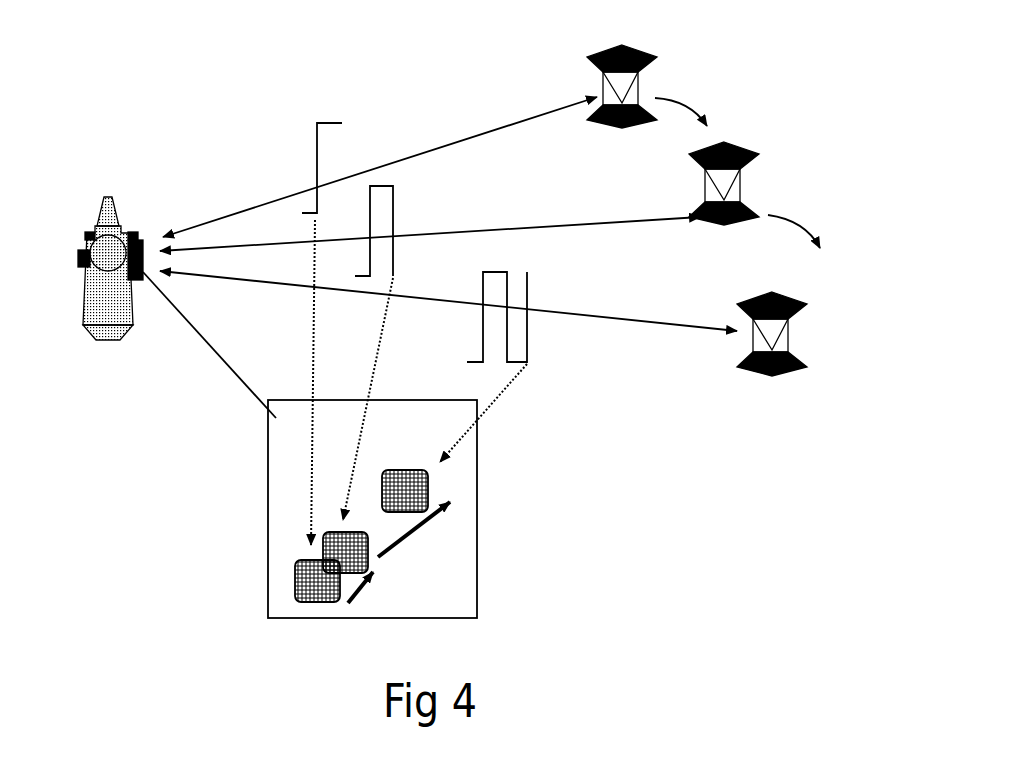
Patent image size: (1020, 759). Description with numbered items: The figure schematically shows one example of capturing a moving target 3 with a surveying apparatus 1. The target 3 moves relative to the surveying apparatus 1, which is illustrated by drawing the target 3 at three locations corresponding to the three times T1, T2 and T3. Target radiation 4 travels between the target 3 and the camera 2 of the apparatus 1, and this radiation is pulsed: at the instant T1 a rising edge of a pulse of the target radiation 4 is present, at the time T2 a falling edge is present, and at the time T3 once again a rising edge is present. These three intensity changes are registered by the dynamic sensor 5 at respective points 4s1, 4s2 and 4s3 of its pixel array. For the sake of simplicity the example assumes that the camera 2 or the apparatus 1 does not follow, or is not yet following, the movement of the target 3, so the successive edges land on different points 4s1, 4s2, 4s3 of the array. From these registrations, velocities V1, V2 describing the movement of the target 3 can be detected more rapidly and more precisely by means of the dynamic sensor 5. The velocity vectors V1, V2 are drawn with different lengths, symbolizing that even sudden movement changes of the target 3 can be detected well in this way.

The surveying apparatus 1 is at (103, 178).
The camera 2 is at (140, 222).
The target 3 is at (731, 208).
The target radiation 4 is at (350, 105).
The sensor 5 is at (364, 520).
The point of the pixel array 4s1 is at (284, 580).
The point of the pixel array 4s2 is at (312, 544).
The point of the pixel array 4s3 is at (440, 473).
The velocity vector V1 is at (372, 597).
The velocity vector V2 is at (420, 541).
The time T1 is at (703, 72).
The time T2 is at (778, 183).
The time T3 is at (820, 335).